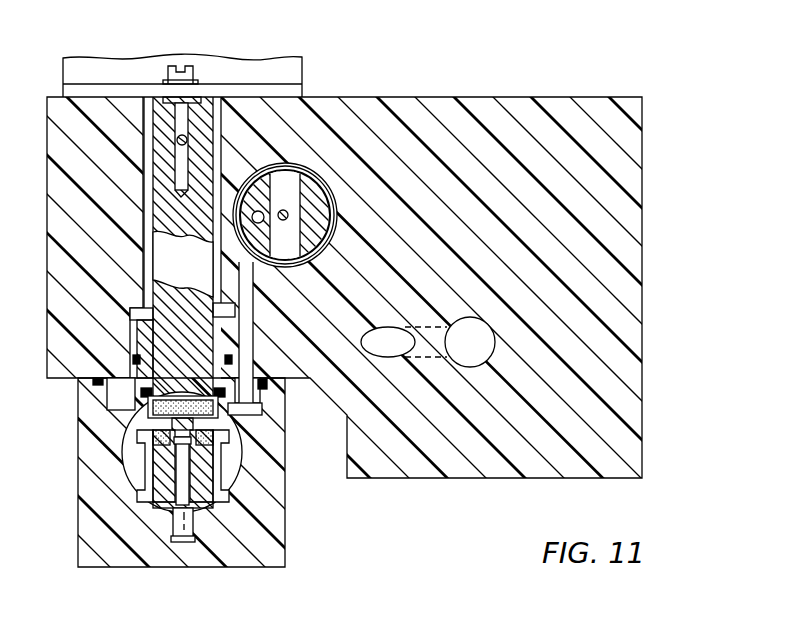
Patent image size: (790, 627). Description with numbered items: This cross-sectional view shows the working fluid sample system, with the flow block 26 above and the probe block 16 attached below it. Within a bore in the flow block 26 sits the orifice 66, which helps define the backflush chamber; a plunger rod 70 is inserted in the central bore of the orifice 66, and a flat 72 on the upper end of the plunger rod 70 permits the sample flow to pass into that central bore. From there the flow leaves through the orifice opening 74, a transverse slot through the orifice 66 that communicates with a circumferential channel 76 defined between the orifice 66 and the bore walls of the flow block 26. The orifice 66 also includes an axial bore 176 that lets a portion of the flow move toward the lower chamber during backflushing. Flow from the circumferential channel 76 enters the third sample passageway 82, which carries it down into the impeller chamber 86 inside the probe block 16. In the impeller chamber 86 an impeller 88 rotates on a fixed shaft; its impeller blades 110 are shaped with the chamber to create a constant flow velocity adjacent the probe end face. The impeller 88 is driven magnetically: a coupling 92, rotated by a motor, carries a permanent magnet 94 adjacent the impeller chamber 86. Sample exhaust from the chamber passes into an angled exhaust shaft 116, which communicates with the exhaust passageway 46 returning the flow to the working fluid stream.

The flow block 26 is at (640, 378).
The probe block 16 is at (272, 506).
The orifice opening 74 is at (288, 181).
The orifice 66 is at (310, 188).
The circumferential channel 76 is at (327, 198).
The axial bore 176 is at (258, 211).
The plunger rod 70 is at (290, 215).
The flat 72 is at (292, 219).
The coupling 92 is at (203, 276).
The third sample passageway 82 is at (253, 298).
The angled exhaust shaft 116 is at (403, 328).
The exhaust passageway 46 is at (481, 320).
The permanent magnet 94 is at (150, 397).
The impeller chamber 86 is at (233, 457).
The impeller blades 110 is at (148, 465).
The impeller 88 is at (201, 491).